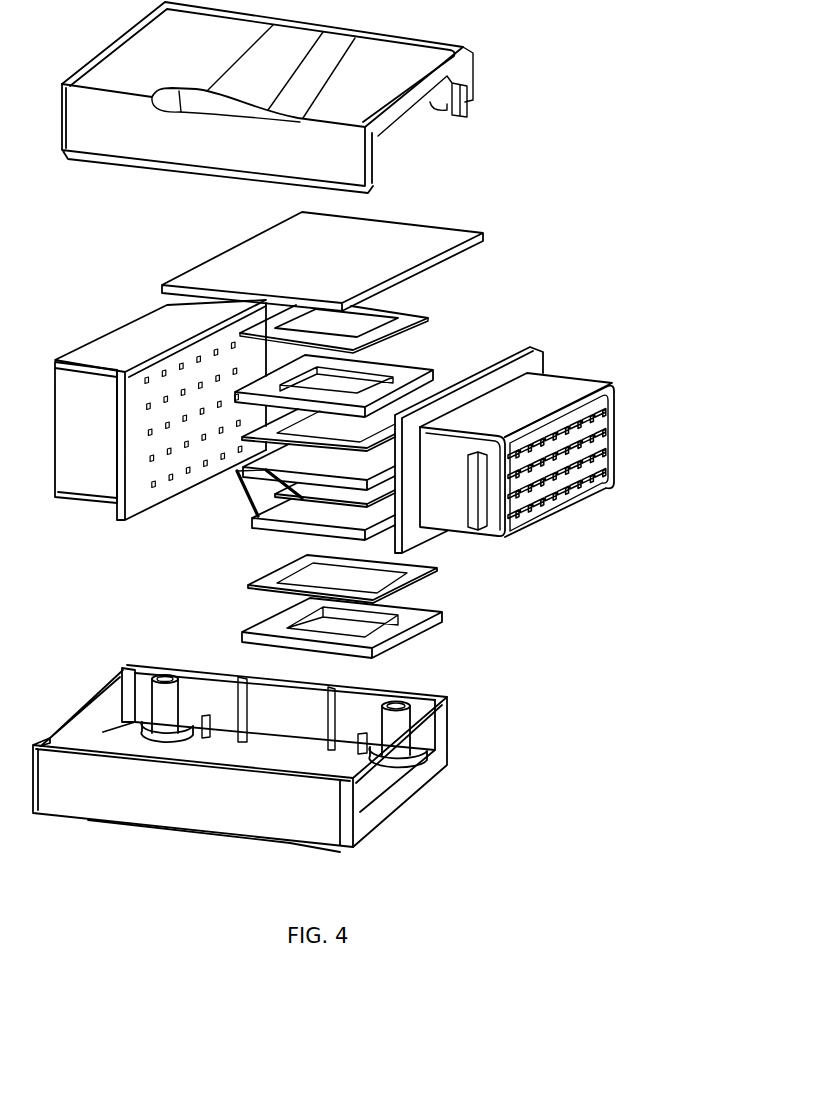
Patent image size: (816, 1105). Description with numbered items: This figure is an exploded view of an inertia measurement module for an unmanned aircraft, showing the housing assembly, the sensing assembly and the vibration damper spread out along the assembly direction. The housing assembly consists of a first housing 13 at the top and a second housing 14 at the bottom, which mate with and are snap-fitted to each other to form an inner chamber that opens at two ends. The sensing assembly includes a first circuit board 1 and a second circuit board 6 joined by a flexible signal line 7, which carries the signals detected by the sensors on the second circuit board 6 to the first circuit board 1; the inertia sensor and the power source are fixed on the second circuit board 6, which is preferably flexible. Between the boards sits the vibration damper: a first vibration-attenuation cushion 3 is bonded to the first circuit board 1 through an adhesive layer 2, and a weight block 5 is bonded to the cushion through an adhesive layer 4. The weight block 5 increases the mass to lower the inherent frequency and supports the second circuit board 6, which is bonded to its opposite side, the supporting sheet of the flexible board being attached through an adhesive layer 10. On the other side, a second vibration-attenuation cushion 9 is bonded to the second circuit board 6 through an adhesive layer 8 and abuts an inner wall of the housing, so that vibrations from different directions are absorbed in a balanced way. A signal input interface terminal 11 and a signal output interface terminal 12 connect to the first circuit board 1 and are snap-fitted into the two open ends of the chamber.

The first circuit board 1 is at (401, 235).
The adhesive layer 2 is at (407, 317).
The first vibration-attenuation cushion 3 is at (377, 368).
The adhesive layer 4 is at (418, 403).
The weight block 5 is at (240, 472).
The second circuit board 6 is at (310, 527).
The flexible signal line 7 is at (255, 495).
The adhesive layer 8 is at (248, 584).
The second vibration-attenuation cushion 9 is at (410, 632).
The adhesive layer 10 is at (295, 493).
The signal input interface terminal 11 is at (118, 345).
The signal output interface terminal 12 is at (558, 390).
The first housing 13 is at (401, 57).
The second housing 14 is at (177, 817).